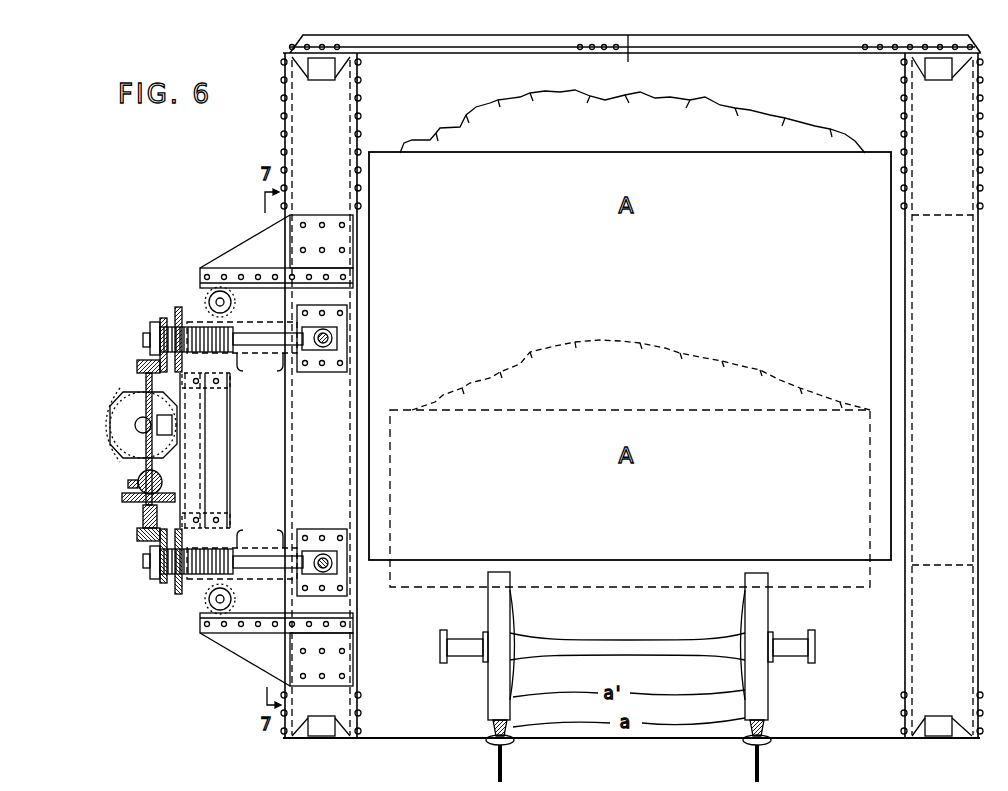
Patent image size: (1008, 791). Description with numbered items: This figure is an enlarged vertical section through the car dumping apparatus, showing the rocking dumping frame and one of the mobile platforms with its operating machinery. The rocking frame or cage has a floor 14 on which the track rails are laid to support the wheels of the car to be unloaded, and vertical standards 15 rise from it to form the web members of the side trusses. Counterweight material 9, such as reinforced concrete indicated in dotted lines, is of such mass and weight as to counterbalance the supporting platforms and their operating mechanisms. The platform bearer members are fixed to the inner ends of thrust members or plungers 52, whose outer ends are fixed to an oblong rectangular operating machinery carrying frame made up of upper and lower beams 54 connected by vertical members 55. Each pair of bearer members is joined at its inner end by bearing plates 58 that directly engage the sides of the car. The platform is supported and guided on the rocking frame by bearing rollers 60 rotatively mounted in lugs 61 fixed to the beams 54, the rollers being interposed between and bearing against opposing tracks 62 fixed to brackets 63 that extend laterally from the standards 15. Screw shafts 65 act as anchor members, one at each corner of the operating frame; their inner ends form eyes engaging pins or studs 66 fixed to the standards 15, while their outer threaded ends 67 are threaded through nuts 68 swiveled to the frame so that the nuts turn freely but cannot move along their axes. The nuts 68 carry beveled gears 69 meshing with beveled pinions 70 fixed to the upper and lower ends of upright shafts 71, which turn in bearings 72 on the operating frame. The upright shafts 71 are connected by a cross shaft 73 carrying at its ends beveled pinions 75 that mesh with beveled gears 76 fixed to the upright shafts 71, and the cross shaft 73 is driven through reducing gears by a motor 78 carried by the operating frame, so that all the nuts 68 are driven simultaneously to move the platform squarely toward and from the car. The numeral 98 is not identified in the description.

The counterweight material 9 is at (940, 175).
The floor 14 is at (870, 740).
The vertical standards 15 is at (347, 410).
The thrust members or plungers 52 is at (280, 362).
The upper and lower beams 54 is at (172, 313).
The vertical members 55 is at (227, 437).
The bearing plates 58 is at (360, 362).
The bearing rollers 60 is at (245, 295).
The lugs 61 is at (196, 318).
The tracks 62 is at (268, 302).
The brackets 63 is at (263, 230).
The screw shafts 65 is at (263, 336).
The pins or studs 66 is at (345, 332).
The outer threaded ends 67 is at (228, 510).
The nuts 68 is at (160, 316).
The beveled gears 69 is at (150, 318).
The beveled pinions 70 is at (135, 367).
The upright shafts 71 is at (117, 412).
The bearings 72 is at (142, 382).
The cross shaft 73 is at (137, 477).
The beveled pinions 75 is at (128, 487).
The beveled gears 76 is at (120, 495).
The motor 78 is at (113, 430).
The lower post plate 98 is at (942, 645).